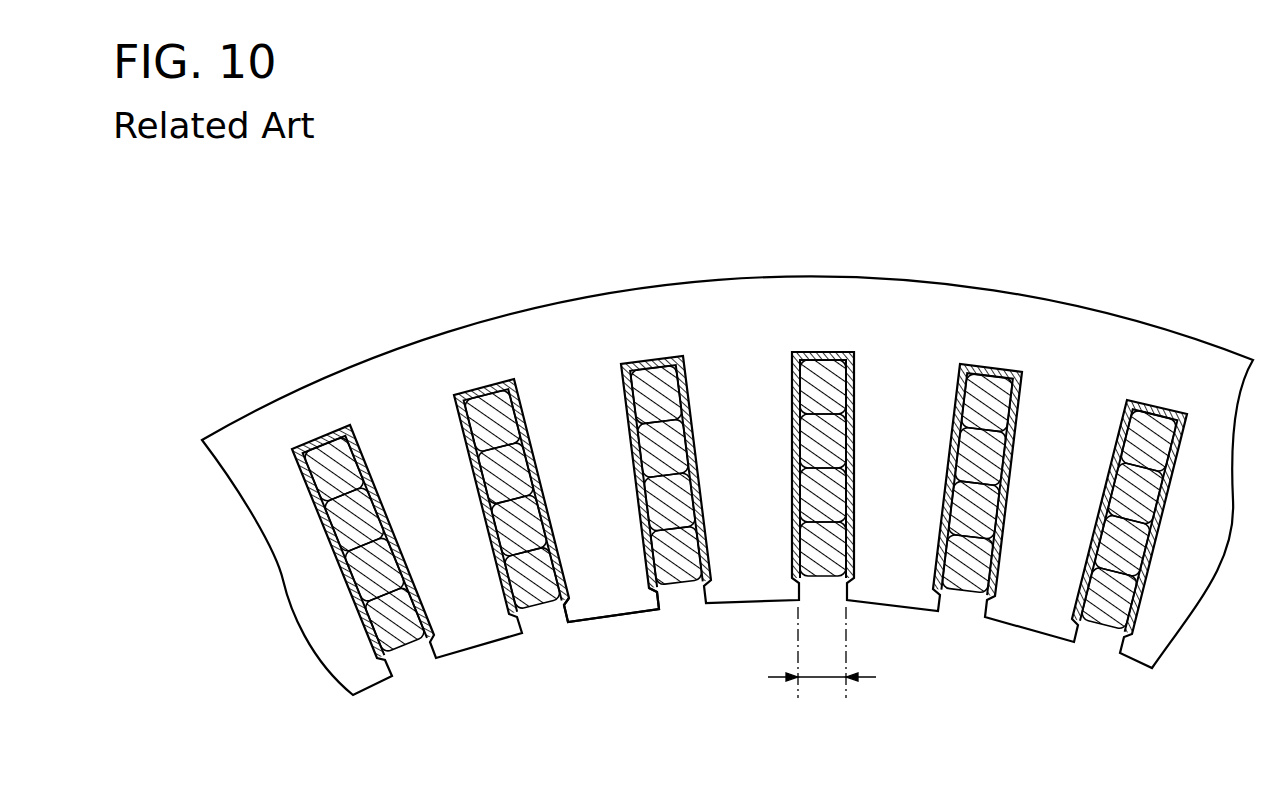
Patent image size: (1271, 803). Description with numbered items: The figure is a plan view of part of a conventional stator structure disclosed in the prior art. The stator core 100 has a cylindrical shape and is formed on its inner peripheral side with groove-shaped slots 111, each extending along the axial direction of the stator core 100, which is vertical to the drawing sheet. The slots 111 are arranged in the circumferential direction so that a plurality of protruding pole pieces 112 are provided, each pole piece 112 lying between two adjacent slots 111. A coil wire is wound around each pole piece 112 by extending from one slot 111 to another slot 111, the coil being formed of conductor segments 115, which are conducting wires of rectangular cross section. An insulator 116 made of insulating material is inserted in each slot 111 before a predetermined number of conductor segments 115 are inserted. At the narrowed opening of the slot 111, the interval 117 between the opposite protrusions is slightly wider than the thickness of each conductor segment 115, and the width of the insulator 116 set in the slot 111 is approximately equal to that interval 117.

The stator core 100 is at (617, 310).
The slot 111 is at (326, 582).
The pole piece 112 is at (613, 608).
The conductor segment 115 is at (958, 585).
The insulator 116 is at (338, 568).
The interval 117 is at (822, 669).